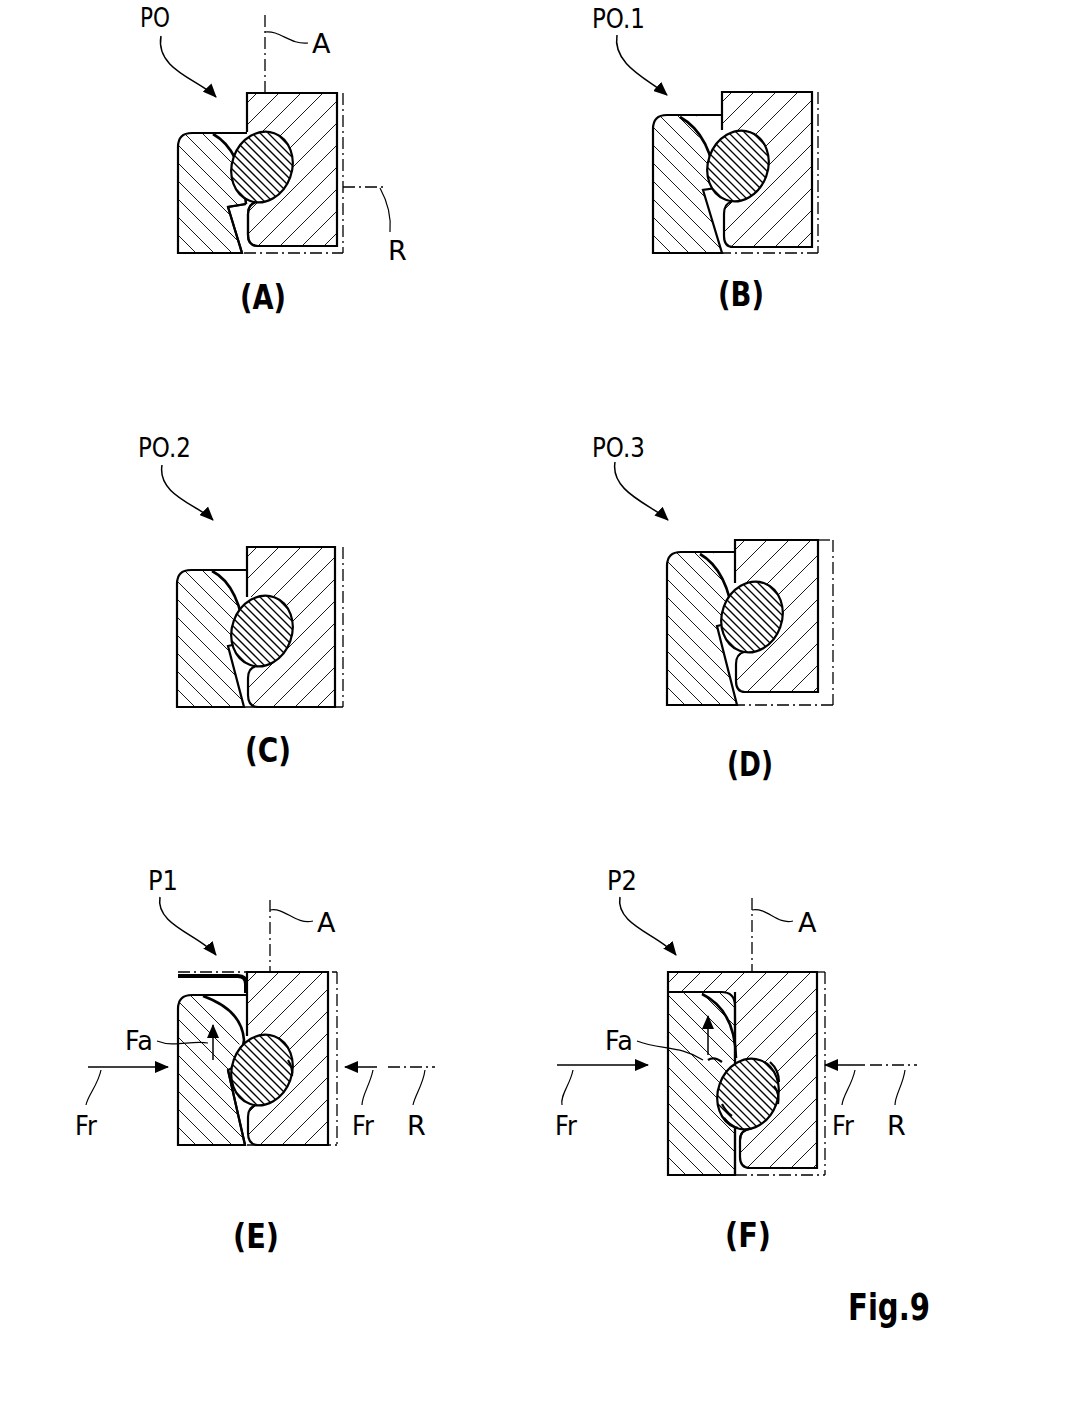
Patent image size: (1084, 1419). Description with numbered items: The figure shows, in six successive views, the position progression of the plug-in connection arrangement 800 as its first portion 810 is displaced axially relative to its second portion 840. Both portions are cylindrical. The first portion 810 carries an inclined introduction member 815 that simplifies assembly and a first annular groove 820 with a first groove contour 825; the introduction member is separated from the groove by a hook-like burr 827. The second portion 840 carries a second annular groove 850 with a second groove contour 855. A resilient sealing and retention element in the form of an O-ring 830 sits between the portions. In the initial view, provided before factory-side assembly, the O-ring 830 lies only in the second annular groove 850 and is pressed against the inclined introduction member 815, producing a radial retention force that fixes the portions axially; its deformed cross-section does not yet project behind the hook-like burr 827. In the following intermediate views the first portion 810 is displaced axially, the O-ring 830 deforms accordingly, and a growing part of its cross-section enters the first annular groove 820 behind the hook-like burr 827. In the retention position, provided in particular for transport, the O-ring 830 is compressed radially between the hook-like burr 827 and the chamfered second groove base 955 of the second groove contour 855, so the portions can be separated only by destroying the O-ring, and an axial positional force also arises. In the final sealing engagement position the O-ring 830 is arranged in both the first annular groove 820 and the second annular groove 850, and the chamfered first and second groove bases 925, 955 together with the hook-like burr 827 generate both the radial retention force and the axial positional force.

In FIG. 9A, the plug-in connection arrangement 800 is at (147, 123).
In FIG. 9A, the first portion 810 is at (217, 182).
In FIG. 9E, the first portion 810 is at (207, 1105).
In FIG. 9F, the first portion 810 is at (685, 1003).
In FIG. 9A, the inclined introduction member 815 is at (203, 150).
In FIG. 9A, the first annular groove 820 is at (225, 227).
In FIG. 9E, the first annular groove 820 is at (236, 1115).
In FIG. 9F, the first annular groove 820 is at (728, 1105).
In FIG. 9F, the first groove contour 825 is at (728, 1110).
In FIG. 9A, the hook-like burr 827 is at (245, 194).
In FIG. 9F, the hook-like burr 827 is at (712, 1074).
In FIG. 9A, the O-ring 830 is at (313, 122).
In FIG. 9F, the O-ring 830 is at (727, 1075).
In FIG. 9A, the second portion 840 is at (341, 104).
In FIG. 9E, the second portion 840 is at (311, 999).
In FIG. 9F, the second portion 840 is at (803, 987).
In FIG. 9A, the second annular groove 850 is at (279, 165).
In FIG. 9E, the second annular groove 850 is at (293, 1108).
In FIG. 9F, the second annular groove 850 is at (807, 1170).
In FIG. 9E, the second groove contour 855 is at (297, 1052).
In FIG. 9F, the second groove contour 855 is at (765, 1062).
In FIG. 9F, the chamfered first groove base 925 is at (727, 1118).
In FIG. 9E, the chamfered second groove base 955 is at (293, 1067).
In FIG. 9F, the chamfered second groove base 955 is at (778, 1093).